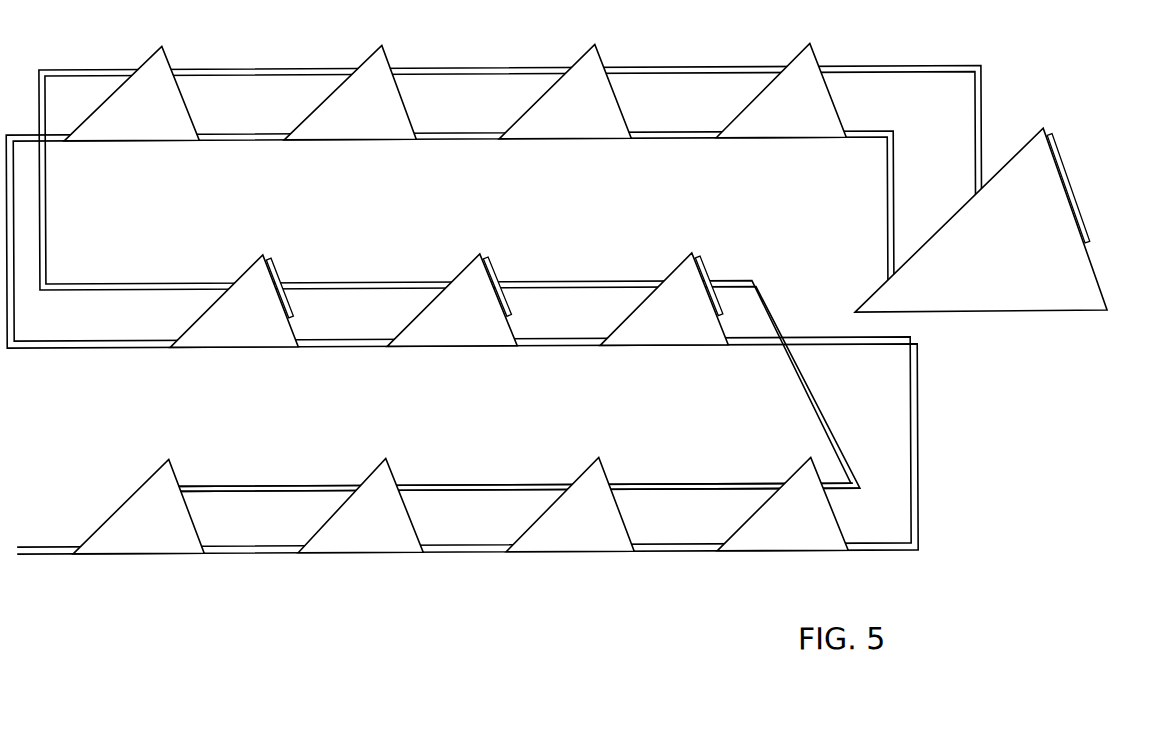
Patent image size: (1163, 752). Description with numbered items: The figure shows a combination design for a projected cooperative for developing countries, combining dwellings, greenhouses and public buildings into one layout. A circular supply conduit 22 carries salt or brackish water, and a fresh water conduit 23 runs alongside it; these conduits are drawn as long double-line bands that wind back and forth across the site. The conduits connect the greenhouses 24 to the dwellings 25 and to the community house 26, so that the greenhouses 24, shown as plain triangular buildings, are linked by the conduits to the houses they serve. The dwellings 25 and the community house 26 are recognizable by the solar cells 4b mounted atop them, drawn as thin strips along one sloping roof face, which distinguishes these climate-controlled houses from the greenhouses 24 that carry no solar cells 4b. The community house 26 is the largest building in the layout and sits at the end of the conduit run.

The circular supply conduit 22 is at (682, 547).
The fresh water conduit 23 is at (692, 485).
The greenhouses 24 is at (147, 58).
The dwellings 25 is at (248, 268).
The community house 26 is at (1022, 145).
The solar cells 4b is at (282, 275).